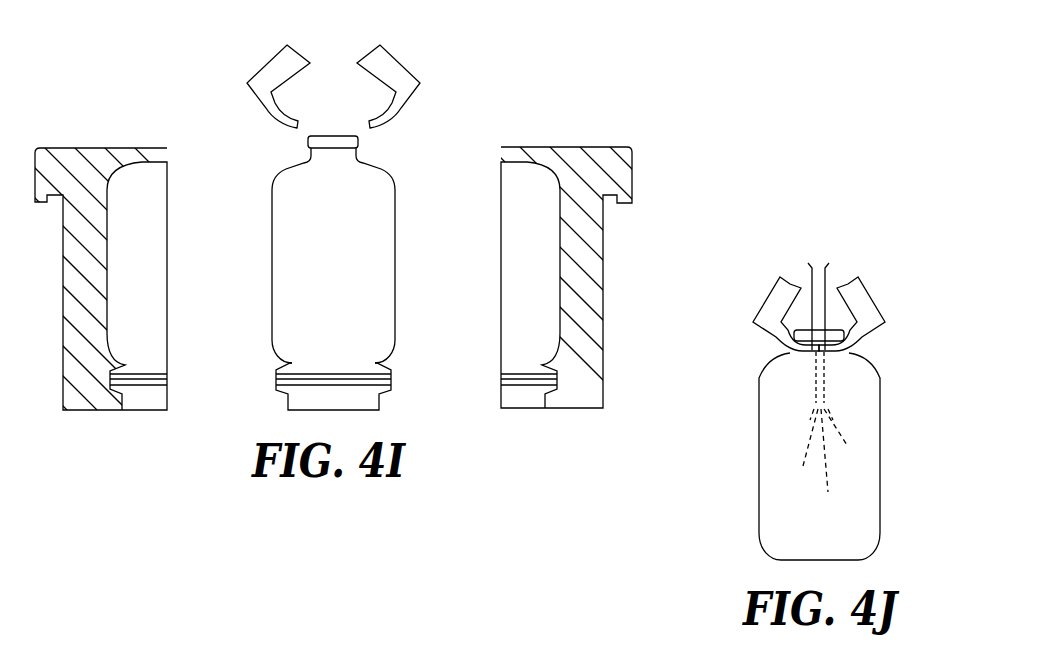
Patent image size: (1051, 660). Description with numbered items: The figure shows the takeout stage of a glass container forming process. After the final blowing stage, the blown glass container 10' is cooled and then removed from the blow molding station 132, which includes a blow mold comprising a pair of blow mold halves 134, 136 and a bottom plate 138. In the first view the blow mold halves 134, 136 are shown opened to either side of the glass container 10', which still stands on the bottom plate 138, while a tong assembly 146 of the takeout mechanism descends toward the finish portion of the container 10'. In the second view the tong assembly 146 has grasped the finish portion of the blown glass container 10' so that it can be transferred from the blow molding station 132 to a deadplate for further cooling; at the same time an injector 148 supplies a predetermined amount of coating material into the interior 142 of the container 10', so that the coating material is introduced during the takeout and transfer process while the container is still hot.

In FIG. 4I, the blown glass container 10' is at (328, 280).
In FIG. 4J, the blown glass container 10' is at (813, 445).
In FIG. 4I, the blow molding station 132 is at (290, 82).
In FIG. 4I, the blow mold half 134 is at (33, 153).
In FIG. 4I, the blow mold half 136 is at (633, 151).
In FIG. 4I, the bottom plate 138 is at (278, 378).
In FIG. 4I, the interior 142 is at (297, 273).
In FIG. 4J, the interior 142 is at (778, 454).
In FIG. 4I, the tong assembly 146 is at (391, 62).
In FIG. 4J, the tong assembly 146 is at (862, 295).
In FIG. 4J, the injector 148 is at (815, 381).